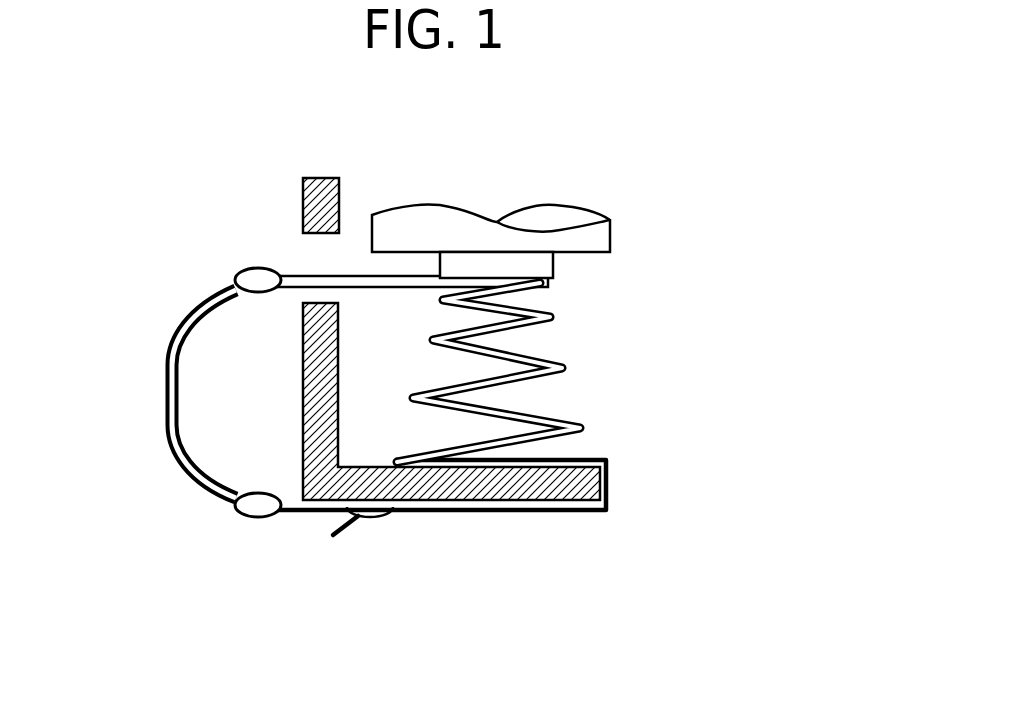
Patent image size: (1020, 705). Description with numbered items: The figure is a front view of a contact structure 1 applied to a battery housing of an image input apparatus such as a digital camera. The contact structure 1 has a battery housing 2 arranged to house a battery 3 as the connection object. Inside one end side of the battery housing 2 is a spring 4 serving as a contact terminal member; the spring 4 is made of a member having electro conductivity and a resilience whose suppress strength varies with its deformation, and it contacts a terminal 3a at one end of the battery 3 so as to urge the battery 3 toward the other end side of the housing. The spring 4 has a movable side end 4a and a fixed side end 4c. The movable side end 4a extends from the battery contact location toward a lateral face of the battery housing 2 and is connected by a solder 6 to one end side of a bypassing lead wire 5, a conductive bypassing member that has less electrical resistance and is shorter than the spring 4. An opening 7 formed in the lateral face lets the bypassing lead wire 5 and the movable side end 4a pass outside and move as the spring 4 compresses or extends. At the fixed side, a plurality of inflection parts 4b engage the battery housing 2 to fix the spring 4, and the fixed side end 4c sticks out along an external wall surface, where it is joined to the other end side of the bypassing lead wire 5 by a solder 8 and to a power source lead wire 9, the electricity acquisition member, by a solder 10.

The contact structure 1 is at (692, 176).
The battery housing 2 is at (302, 385).
The battery 3 is at (611, 235).
The terminal 3a is at (554, 265).
The spring 4 is at (566, 368).
The movable side end 4a is at (400, 288).
The inflection parts 4b is at (607, 458).
The fixed side end 4c is at (300, 513).
The bypassing lead wire 5 is at (167, 385).
The solder 6 is at (243, 270).
The opening 7 is at (307, 238).
The solder 8 is at (245, 516).
The power source lead wire 9 is at (362, 519).
The solder 10 is at (395, 515).